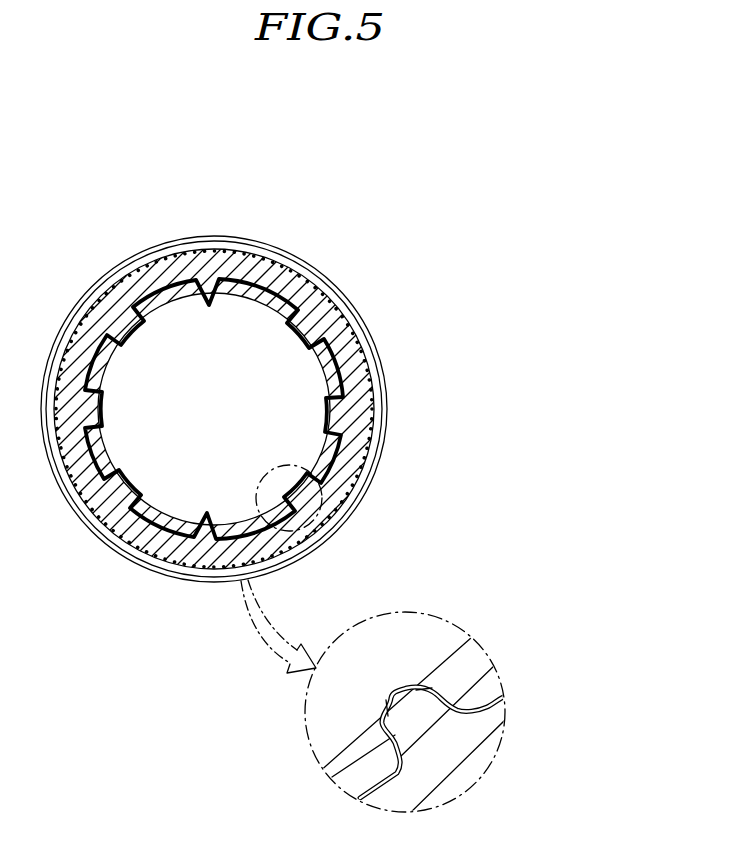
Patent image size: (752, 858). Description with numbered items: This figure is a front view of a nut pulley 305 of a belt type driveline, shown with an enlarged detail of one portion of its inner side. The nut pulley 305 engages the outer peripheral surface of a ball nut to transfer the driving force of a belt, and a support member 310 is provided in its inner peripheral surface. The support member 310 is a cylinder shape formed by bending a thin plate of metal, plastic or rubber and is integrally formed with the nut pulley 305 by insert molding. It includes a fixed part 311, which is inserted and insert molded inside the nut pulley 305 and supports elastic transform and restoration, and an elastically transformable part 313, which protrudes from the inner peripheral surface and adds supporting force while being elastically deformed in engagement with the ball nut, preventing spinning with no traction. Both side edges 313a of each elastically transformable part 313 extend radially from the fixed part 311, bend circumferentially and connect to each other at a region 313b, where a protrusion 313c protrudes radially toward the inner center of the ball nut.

The nut pulley 305 is at (130, 290).
The support member 310 is at (316, 208).
The fixed part 311 is at (262, 296).
The elastically transformable part 313 is at (320, 318).
The side edges 313a is at (440, 690).
The region 313b is at (414, 687).
The protrusion 313c is at (390, 690).